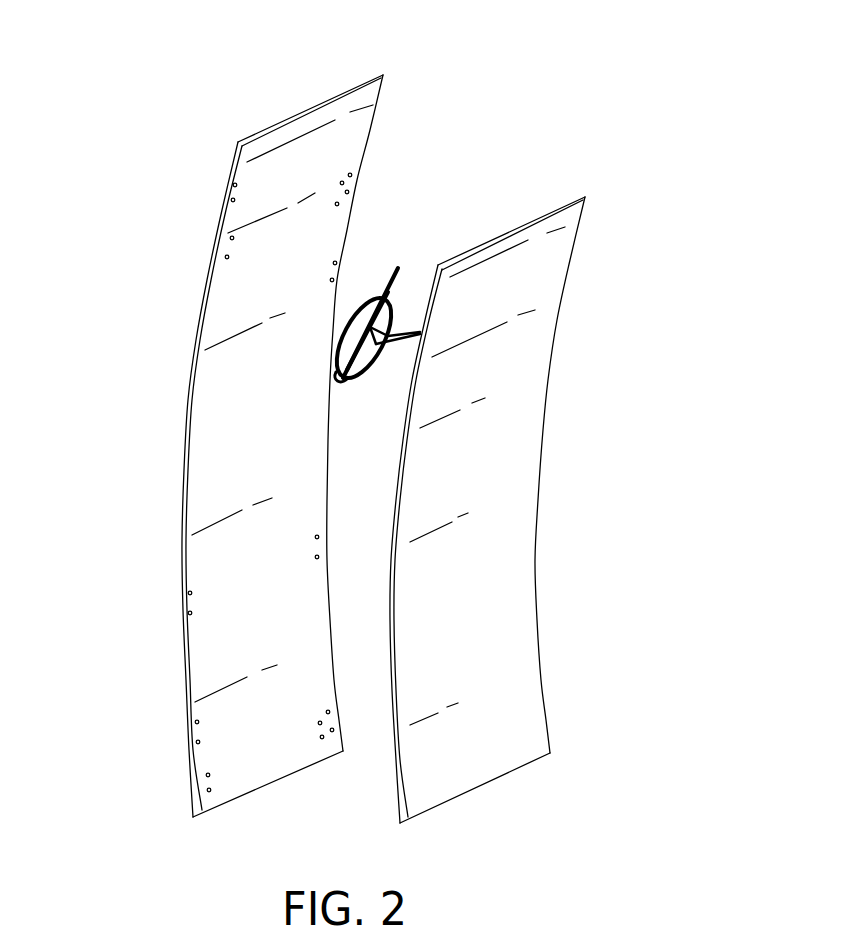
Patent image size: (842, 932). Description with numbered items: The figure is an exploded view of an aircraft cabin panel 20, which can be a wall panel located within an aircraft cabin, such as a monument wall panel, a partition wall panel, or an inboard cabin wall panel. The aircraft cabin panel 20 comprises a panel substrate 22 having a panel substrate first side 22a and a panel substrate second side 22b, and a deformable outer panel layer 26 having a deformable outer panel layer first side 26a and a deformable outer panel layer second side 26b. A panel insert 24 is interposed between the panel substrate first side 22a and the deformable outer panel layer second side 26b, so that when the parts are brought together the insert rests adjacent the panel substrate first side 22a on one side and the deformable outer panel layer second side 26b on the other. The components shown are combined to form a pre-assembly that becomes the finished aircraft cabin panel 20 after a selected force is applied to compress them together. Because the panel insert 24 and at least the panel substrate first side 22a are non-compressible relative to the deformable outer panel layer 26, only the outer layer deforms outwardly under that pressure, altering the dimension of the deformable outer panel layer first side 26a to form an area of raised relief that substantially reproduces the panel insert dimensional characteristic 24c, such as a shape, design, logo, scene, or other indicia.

The aircraft cabin panel 20 is at (643, 283).
The panel substrate 22 is at (272, 127).
The panel substrate first side 22a is at (205, 475).
The panel substrate second side 22b is at (188, 400).
The panel insert 24 is at (396, 268).
The panel insert dimensional characteristic 24c is at (352, 378).
The deformable outer panel layer 26 is at (516, 229).
The deformable outer panel layer first side 26a is at (508, 420).
The deformable outer panel layer second side 26b is at (391, 565).